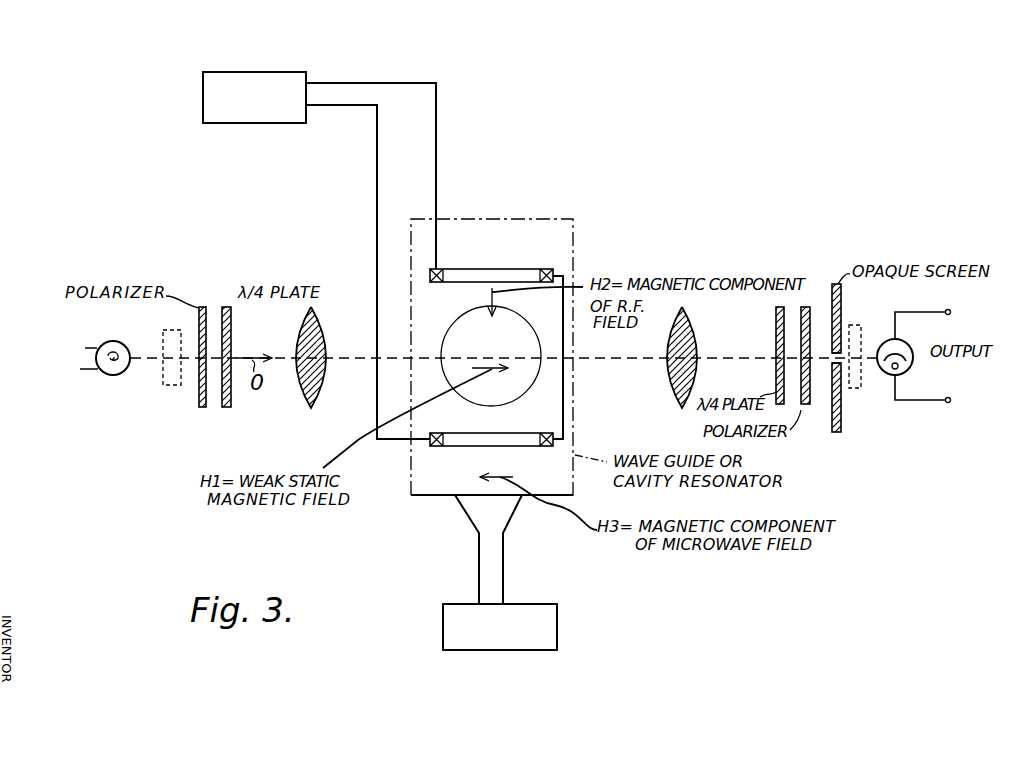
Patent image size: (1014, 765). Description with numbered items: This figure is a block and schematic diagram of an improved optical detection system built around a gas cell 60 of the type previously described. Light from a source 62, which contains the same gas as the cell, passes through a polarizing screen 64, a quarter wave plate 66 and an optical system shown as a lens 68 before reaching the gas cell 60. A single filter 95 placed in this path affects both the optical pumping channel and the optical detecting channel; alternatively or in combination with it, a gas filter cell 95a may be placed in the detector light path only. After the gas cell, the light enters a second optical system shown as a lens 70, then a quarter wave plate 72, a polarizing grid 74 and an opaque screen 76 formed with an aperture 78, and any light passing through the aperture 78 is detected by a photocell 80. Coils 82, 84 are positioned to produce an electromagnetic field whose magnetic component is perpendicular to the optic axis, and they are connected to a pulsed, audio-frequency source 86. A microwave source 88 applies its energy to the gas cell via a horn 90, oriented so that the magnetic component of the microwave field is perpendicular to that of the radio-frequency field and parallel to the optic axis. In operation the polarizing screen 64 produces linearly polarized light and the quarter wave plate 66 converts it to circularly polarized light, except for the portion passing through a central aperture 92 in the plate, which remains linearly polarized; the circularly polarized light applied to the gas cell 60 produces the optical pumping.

The gas cell 60 is at (540, 331).
The light source 62 is at (118, 375).
The polarizing screen 64 is at (200, 408).
The quarter wave plate 66 is at (224, 408).
The lens 68 is at (308, 408).
The lens 70 is at (674, 380).
The quarter wave plate 72 is at (776, 312).
The polarizing grid 74 is at (806, 406).
The opaque screen 76 is at (837, 432).
The aperture 78 is at (832, 356).
The photocell 80 is at (907, 366).
The coil 82 is at (543, 268).
The coil 84 is at (551, 433).
The pulsed audio-frequency source 86 is at (288, 74).
The microwave source 88 is at (557, 606).
The horn 90 is at (508, 518).
The central aperture 92 is at (236, 356).
The filter 95 is at (164, 334).
The gas filter cell 95a is at (856, 388).